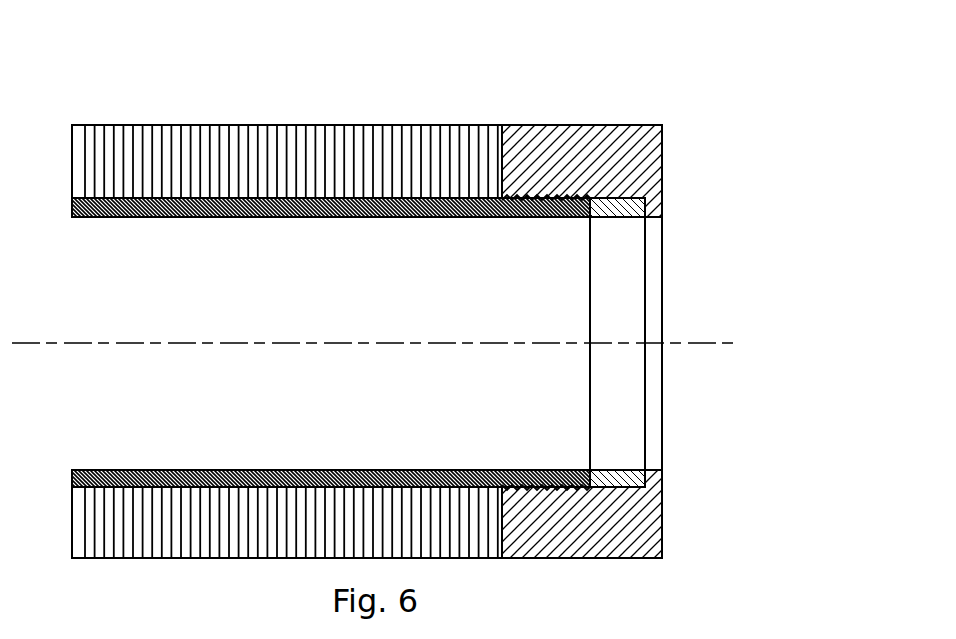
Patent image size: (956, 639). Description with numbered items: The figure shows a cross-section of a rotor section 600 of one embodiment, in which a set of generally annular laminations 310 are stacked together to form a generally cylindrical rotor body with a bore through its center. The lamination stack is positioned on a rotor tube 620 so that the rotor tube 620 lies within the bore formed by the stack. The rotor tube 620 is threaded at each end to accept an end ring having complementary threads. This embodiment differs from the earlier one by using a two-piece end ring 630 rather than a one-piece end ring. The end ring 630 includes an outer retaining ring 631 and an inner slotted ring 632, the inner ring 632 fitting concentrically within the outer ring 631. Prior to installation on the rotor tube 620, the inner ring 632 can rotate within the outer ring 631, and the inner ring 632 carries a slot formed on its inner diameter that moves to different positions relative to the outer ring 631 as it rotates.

The rotor section 600 is at (477, 82).
The annular lamination 310 is at (315, 125).
The rotor tube 620 is at (288, 217).
The two-piece end ring 630 is at (672, 115).
The outer retaining ring 631 is at (663, 178).
The inner slotted ring 632 is at (617, 219).